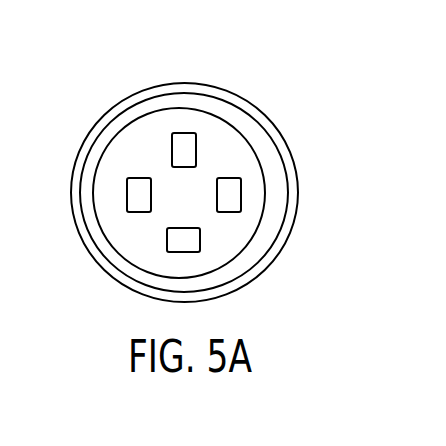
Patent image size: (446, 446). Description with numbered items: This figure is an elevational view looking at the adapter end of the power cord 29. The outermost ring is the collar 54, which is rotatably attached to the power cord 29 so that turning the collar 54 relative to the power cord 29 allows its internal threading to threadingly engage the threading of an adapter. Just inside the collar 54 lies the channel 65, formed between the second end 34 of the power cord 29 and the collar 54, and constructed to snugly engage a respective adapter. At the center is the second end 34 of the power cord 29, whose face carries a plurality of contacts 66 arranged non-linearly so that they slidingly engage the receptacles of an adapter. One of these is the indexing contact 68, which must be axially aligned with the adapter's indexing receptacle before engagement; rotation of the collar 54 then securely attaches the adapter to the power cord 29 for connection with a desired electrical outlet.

The power cord 29 is at (273, 62).
The collar 54 is at (183, 83).
The channel 65 is at (255, 135).
The second end 34 is at (237, 237).
The indexing contact 68 is at (192, 240).
The plurality of contacts 66 is at (150, 233).